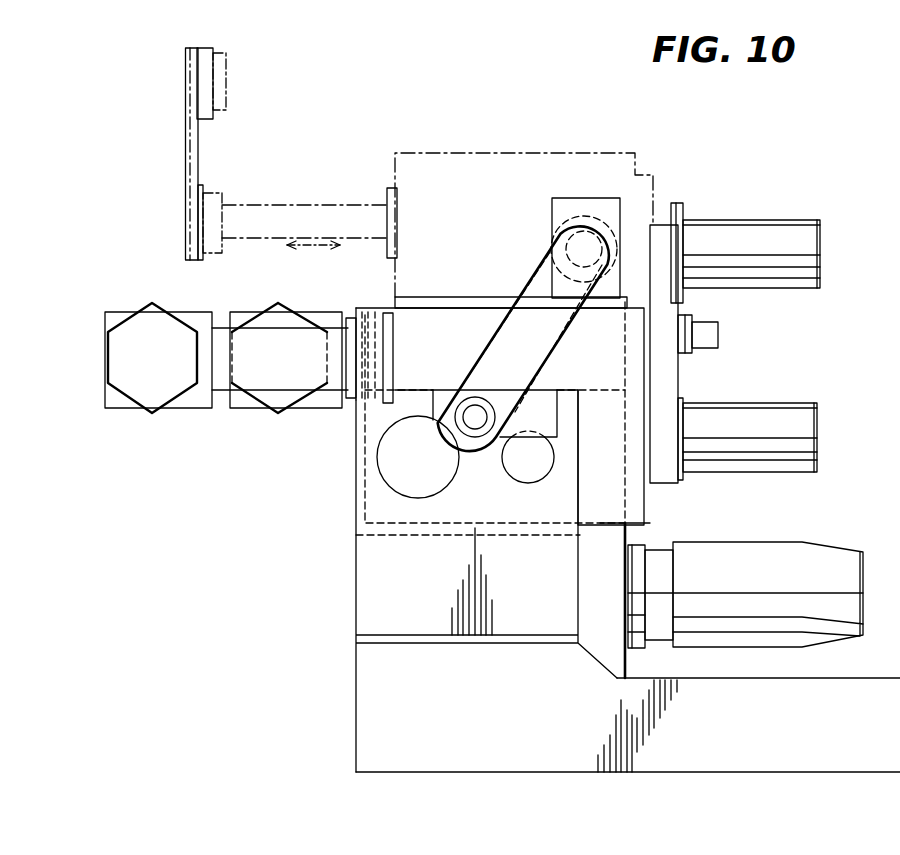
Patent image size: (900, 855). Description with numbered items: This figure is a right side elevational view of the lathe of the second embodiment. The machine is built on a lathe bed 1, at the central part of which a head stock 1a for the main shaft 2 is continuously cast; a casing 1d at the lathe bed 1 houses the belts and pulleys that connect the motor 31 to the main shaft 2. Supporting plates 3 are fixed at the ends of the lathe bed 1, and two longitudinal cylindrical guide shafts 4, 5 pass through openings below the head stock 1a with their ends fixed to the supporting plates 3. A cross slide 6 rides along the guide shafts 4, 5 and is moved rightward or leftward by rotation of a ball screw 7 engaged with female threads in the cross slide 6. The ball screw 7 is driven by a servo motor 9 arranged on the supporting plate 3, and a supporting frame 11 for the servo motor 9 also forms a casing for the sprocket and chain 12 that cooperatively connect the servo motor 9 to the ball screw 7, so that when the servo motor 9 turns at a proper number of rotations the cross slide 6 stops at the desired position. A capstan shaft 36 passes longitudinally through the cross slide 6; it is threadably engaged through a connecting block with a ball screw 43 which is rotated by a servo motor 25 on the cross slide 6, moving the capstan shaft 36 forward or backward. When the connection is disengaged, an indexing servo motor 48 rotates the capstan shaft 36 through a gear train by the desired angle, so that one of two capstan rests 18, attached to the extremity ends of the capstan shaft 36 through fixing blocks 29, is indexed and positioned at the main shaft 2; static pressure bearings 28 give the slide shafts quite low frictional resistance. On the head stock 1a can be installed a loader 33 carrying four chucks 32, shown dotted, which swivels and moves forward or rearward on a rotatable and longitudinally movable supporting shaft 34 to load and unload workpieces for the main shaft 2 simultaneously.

The lathe bed 1 is at (545, 721).
The head stock 1a is at (430, 300).
The casing 1d is at (612, 653).
The main shaft 2 is at (372, 310).
The supporting plate 3 is at (373, 588).
The guide shaft 4 is at (433, 480).
The guide shaft 5 is at (533, 470).
The cross slide 6 is at (429, 366).
The ball screw 7 is at (475, 425).
The servo motor 9 is at (566, 215).
The supporting frame 11 is at (543, 330).
The sprocket and chain 12 is at (487, 340).
The capstan rest 18 is at (153, 322).
The servo motor 25 is at (813, 245).
The bearing 28 is at (345, 382).
The fixing block 29 is at (200, 322).
The motor 31 is at (763, 560).
The chuck 32 is at (226, 56).
The loader 33 is at (400, 98).
The rotatable supporting shaft 34 is at (297, 205).
The capstan shaft 36 is at (258, 382).
The ball screw 43 is at (720, 332).
The indexing servo motor 48 is at (807, 430).